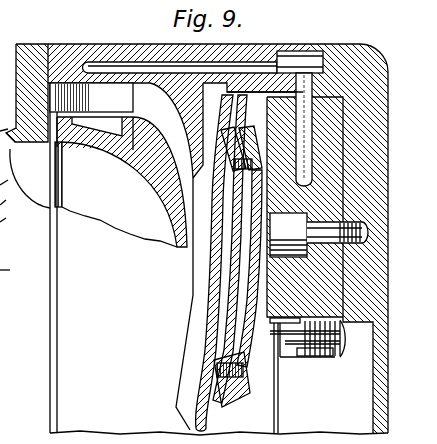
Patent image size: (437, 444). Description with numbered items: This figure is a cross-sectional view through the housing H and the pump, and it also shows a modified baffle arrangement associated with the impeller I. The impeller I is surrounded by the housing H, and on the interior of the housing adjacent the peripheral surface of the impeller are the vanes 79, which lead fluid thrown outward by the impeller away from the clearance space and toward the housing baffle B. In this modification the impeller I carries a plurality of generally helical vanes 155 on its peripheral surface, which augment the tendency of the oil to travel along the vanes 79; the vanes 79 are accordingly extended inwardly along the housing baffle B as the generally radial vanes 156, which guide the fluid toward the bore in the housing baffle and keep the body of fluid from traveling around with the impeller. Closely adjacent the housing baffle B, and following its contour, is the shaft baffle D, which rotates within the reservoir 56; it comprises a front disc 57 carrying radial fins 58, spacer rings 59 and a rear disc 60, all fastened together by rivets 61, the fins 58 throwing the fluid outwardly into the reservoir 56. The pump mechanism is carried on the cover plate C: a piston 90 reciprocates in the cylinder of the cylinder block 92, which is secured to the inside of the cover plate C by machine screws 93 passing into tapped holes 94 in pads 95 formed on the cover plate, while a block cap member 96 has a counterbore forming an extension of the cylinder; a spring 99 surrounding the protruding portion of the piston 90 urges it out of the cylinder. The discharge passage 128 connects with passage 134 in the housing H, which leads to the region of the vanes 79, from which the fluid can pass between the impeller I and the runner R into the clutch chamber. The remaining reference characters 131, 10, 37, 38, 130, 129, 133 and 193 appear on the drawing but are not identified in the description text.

The cover plate C is at (330, 43).
The discharge passage 128 is at (0, 46).
The housing H is at (64, 42).
The casing flange 131 is at (8, 101).
The passage 134 is at (133, 62).
The block cap member 96 is at (300, 51).
The bolt 10 is at (304, 129).
The front disc 57 is at (230, 95).
The reservoir 56 is at (256, 93).
The vanes 79 is at (122, 109).
The helical vanes 155 is at (133, 124).
The impeller I is at (167, 223).
The drum 37 is at (98, 208).
The runner R is at (17, 148).
The drum web 38 is at (42, 199).
The casing portion 130 is at (11, 188).
The casing portion 129 is at (12, 209).
The casing portion 133 is at (12, 226).
The casing portion 193 is at (12, 278).
The radial fins 58 is at (210, 137).
The radial vanes 156 is at (193, 310).
The housing baffle B is at (194, 379).
The rivets 61 is at (226, 172).
The cylinder block 92 is at (272, 277).
The spacer rings 59 is at (238, 128).
The rear disc 60 is at (257, 128).
The shaft baffle D is at (250, 355).
The machine screws 93 is at (300, 233).
The spring 99 is at (287, 357).
The tapped holes 94 is at (347, 320).
The pads 95 is at (366, 333).
The piston 90 is at (317, 357).